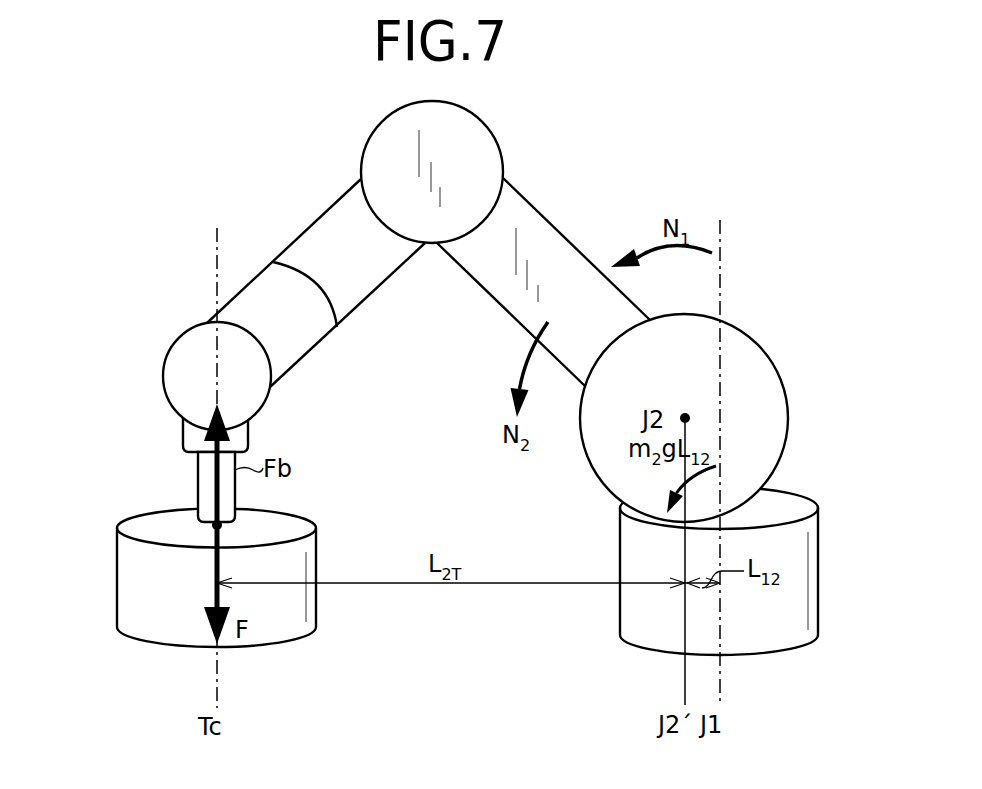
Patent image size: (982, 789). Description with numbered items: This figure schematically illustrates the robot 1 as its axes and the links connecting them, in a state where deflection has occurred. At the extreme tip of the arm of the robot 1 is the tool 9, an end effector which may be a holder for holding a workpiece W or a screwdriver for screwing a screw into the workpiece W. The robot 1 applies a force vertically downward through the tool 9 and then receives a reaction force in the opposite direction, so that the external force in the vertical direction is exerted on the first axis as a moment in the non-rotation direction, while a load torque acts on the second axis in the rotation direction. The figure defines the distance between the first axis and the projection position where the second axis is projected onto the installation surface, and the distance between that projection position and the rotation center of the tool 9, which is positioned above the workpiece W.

The robot 1 is at (594, 200).
The tool 9 is at (198, 483).
The workpiece W is at (117, 571).